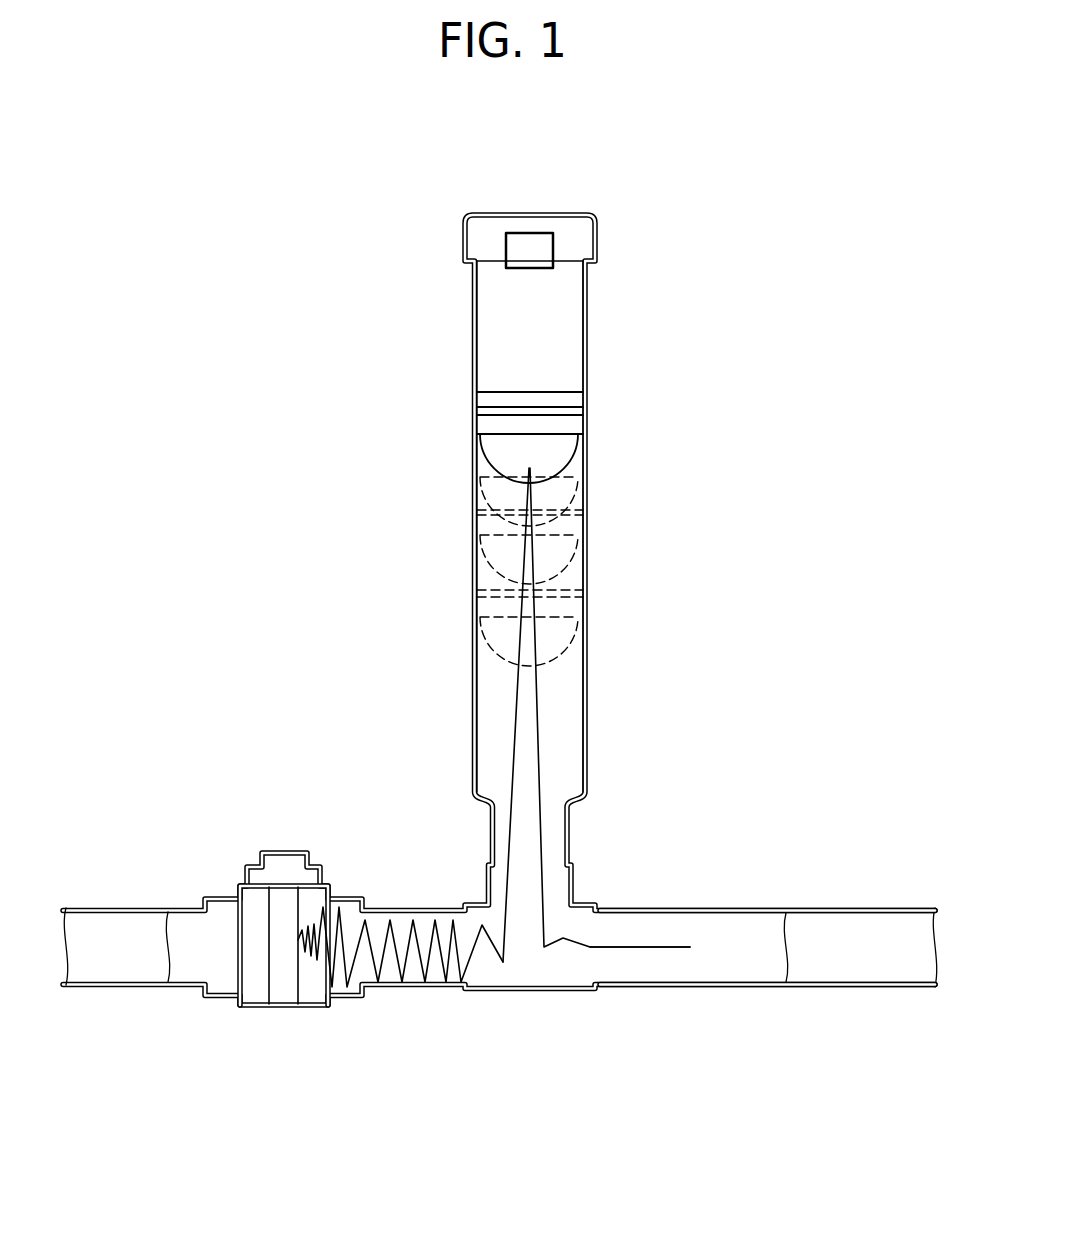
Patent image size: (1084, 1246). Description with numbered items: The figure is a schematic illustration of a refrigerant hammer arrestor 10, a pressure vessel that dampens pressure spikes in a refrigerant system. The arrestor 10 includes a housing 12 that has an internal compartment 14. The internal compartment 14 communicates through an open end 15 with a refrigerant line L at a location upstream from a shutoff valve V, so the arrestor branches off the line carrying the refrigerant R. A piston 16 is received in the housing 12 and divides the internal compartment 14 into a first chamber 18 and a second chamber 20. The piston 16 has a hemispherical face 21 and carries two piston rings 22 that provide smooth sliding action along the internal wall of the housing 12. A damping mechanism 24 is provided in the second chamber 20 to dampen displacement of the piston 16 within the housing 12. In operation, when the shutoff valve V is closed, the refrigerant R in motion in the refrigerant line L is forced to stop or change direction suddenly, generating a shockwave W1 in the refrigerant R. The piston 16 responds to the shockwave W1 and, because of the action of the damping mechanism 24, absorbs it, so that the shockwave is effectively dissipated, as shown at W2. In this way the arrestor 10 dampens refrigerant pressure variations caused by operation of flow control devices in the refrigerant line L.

The refrigerant hammer arrestor 10 is at (500, 618).
The housing 12 is at (587, 700).
The internal compartment 14 is at (497, 362).
The open end 15 is at (558, 880).
The piston 16 is at (613, 430).
The first chamber 18 is at (490, 715).
The second chamber 20 is at (555, 333).
The hemispherical face 21 is at (548, 453).
The piston rings 22 is at (492, 400).
The damping mechanism 24 is at (527, 247).
The shutoff valve V is at (280, 972).
The shockwave W1 is at (383, 962).
The dissipated shockwave W2 is at (642, 948).
The refrigerant line L is at (843, 908).
The refrigerant R is at (747, 962).